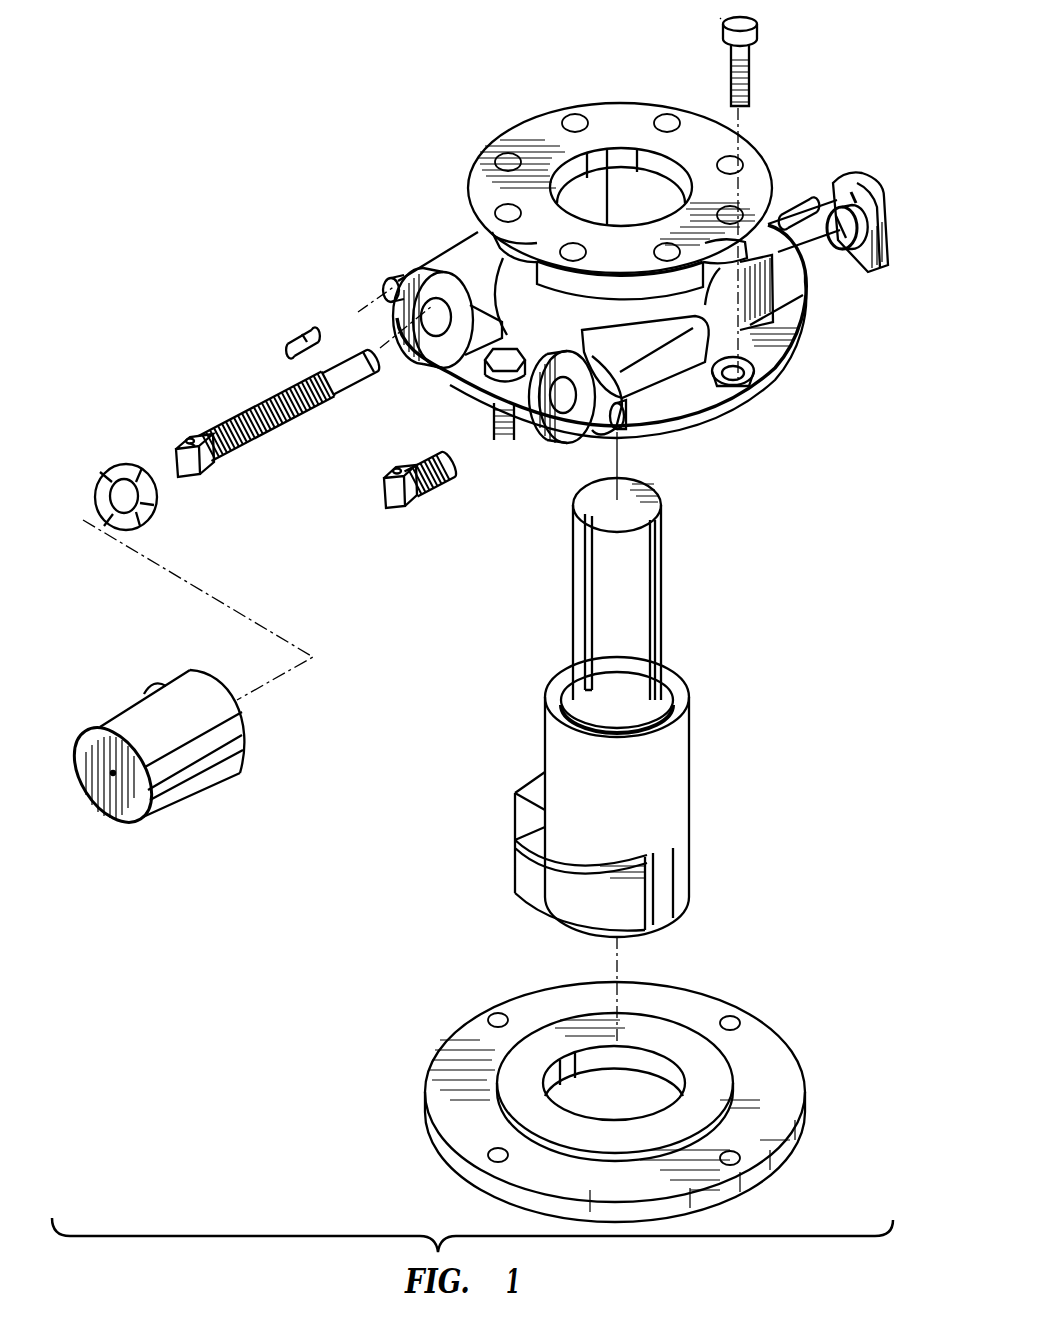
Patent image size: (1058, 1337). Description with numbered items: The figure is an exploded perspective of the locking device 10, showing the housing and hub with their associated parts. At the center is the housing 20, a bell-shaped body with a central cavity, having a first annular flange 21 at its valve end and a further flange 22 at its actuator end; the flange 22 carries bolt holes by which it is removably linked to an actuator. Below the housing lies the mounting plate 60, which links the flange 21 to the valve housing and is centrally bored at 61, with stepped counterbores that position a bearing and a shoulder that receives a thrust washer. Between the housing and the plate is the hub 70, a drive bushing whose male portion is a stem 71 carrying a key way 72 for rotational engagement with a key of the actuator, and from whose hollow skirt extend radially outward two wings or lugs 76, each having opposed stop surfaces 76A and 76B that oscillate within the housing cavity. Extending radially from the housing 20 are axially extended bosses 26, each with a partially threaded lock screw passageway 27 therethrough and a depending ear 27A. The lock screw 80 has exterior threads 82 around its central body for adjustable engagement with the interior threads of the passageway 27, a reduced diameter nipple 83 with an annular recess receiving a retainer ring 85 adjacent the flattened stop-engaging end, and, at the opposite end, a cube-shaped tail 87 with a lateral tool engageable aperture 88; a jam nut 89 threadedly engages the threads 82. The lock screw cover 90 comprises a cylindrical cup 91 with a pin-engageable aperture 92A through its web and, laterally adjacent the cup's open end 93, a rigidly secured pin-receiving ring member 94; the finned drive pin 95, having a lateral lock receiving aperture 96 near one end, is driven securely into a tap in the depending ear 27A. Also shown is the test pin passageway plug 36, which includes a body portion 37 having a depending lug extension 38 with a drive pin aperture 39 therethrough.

The locking device 10 is at (225, 124).
The housing 20 is at (430, 164).
The first annular flange 21 is at (800, 303).
The further flange 22 is at (616, 103).
The bosses 26 is at (452, 255).
The lock screw passageway 27 is at (440, 300).
The depending ear 27A is at (388, 280).
The test pin passageway plug 36 is at (830, 152).
The body portion 37 is at (855, 172).
The depending lug extension 38 is at (880, 222).
The drive pin aperture 39 is at (868, 190).
The mounting plate 60 is at (705, 990).
The central bore 61 is at (640, 1088).
The hub 70 is at (712, 655).
The stem 71 is at (665, 622).
The key way 72 is at (582, 622).
The wings or lugs 76 is at (528, 778).
The stop surface 76A is at (522, 812).
The stop surface 76B is at (655, 890).
The lock screw 80 is at (230, 356).
The exterior threads 82 is at (238, 410).
The reduced diameter nipple 83 is at (345, 395).
The retainer ring 85 is at (382, 366).
The cube-shaped tail 87 is at (182, 450).
The tool engageable aperture 88 is at (222, 470).
The jam nut 89 is at (115, 465).
The lock screw cover 90 is at (152, 846).
The cylindrical cup 91 is at (185, 790).
The pin-engageable aperture 92A is at (113, 773).
The open end 93 is at (245, 745).
The ring member 94 is at (147, 683).
The drive pin 95 is at (305, 332).
The lock receiving aperture 96 is at (291, 345).